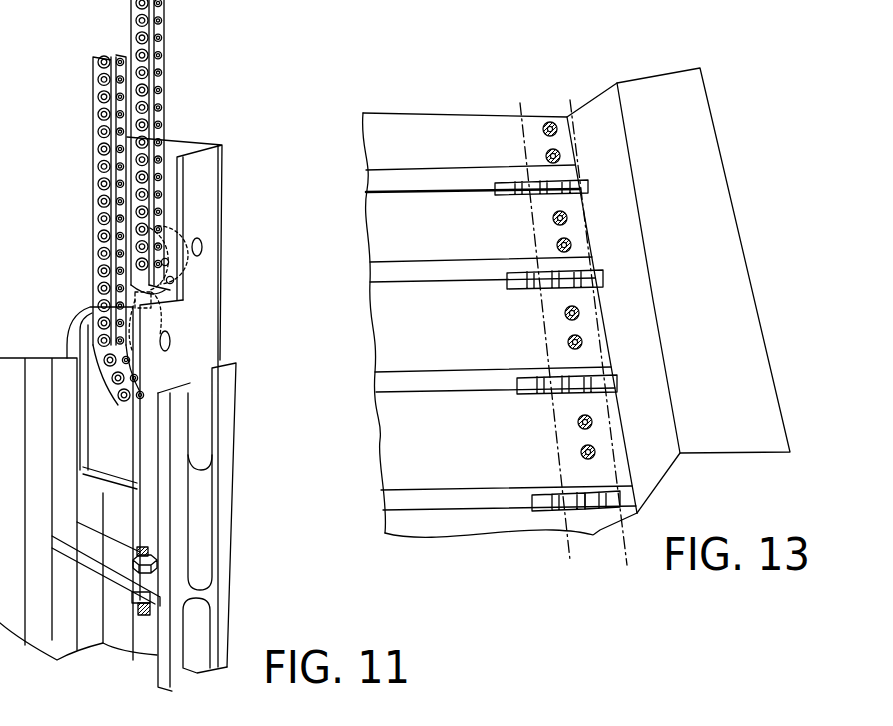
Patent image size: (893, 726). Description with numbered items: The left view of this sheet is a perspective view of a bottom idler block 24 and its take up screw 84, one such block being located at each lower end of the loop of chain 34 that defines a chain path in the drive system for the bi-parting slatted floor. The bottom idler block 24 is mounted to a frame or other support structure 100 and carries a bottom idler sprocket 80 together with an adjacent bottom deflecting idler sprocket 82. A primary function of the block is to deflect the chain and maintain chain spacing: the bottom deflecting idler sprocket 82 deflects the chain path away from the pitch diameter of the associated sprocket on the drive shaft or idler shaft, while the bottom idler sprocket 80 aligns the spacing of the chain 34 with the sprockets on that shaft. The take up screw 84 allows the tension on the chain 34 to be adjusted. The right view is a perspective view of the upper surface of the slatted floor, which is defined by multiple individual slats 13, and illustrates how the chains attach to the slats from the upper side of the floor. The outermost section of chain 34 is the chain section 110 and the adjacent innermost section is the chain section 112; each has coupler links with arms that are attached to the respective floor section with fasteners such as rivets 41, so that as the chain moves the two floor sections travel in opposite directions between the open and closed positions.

In FIG. 13, the slat 13 is at (446, 239).
In FIG. 11, the bottom idler block 24 is at (210, 177).
In FIG. 11, the chain 34 is at (170, 34).
In FIG. 13, the rivet 41 is at (550, 128).
In FIG. 11, the bottom idler sprocket 80 is at (140, 307).
In FIG. 11, the bottom deflecting idler sprocket 82 is at (170, 233).
In FIG. 11, the take up screw 84 is at (143, 615).
In FIG. 11, the support structure 100 is at (227, 473).
In FIG. 13, the outermost chain section 110 is at (613, 502).
In FIG. 13, the innermost chain section 112 is at (563, 503).